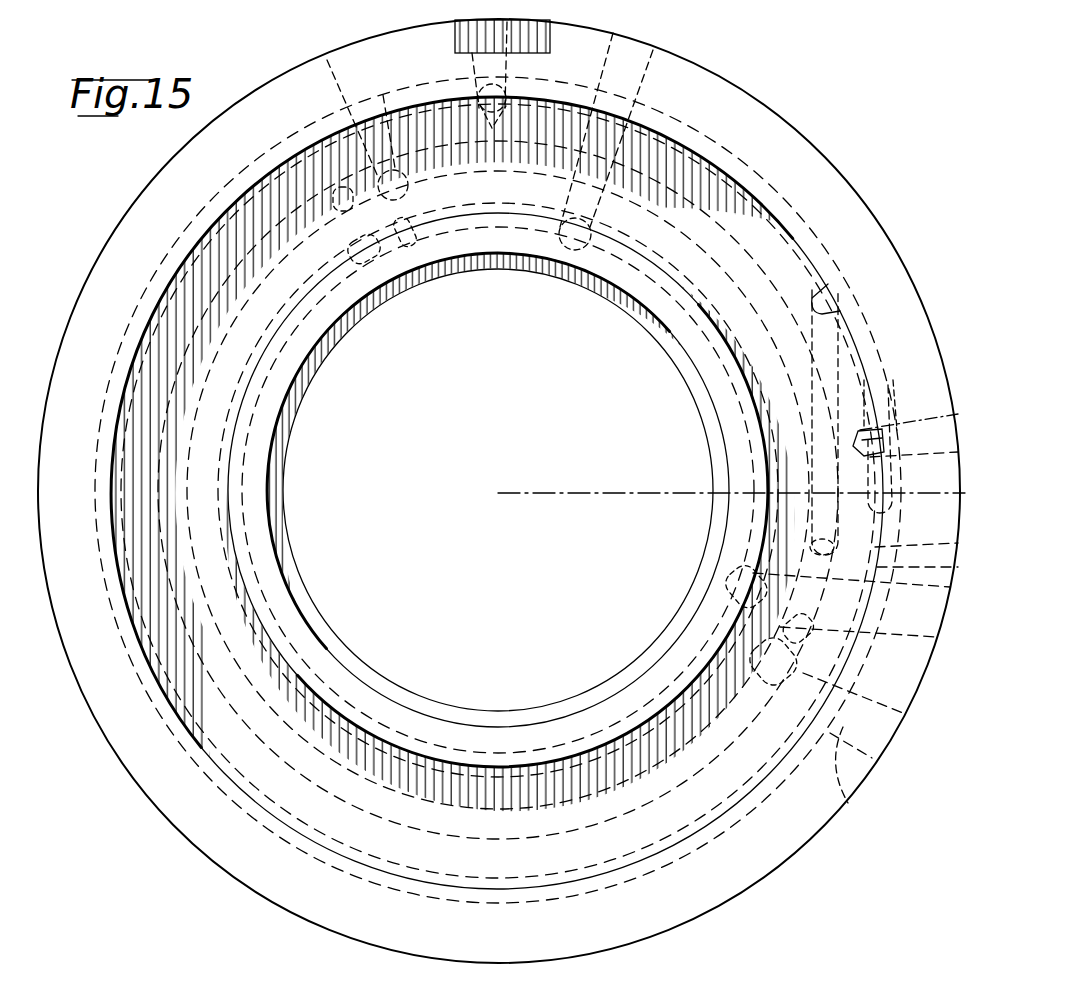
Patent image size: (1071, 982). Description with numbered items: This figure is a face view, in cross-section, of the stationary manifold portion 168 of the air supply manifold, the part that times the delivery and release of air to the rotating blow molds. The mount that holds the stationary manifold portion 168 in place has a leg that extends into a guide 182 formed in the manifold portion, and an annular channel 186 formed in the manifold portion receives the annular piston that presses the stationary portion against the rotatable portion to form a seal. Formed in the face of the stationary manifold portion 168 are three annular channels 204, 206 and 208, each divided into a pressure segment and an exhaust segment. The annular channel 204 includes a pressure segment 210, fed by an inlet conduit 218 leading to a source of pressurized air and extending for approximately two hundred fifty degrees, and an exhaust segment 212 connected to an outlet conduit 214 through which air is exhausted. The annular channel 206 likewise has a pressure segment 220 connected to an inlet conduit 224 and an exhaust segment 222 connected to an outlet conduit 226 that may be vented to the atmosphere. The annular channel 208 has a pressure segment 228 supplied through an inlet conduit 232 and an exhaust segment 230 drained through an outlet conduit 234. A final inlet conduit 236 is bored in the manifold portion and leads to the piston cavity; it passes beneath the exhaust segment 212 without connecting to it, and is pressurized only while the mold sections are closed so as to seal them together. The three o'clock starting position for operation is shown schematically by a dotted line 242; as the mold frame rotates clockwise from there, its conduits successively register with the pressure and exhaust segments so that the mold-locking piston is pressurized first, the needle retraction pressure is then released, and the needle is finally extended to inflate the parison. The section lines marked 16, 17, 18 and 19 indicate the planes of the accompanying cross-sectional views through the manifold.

The stationary manifold portion 168 is at (281, 70).
The guide 182 is at (512, 38).
The annular channel 186 is at (814, 298).
The annular channel 204 is at (697, 205).
The annular channel 206 is at (768, 176).
The annular channel 208 is at (652, 292).
The pressure segment 210 is at (330, 825).
The exhaust segment 212 is at (792, 215).
The outlet conduit 214 is at (480, 78).
The inlet conduit 218 is at (908, 548).
The pressure segment 220 is at (462, 828).
The exhaust segment 222 is at (815, 243).
The inlet conduit 224 is at (861, 783).
The outlet conduit 226 is at (356, 92).
The pressure segment 228 is at (722, 350).
The exhaust segment 230 is at (402, 758).
The inlet conduit 232 is at (618, 97).
The outlet conduit 234 is at (836, 616).
The inlet conduit 236 is at (898, 430).
The dotted line 242 is at (575, 492).
The section line 16 is at (927, 563).
The section line 17 is at (920, 653).
The section line 18 is at (887, 740).
The section line 19 is at (968, 431).